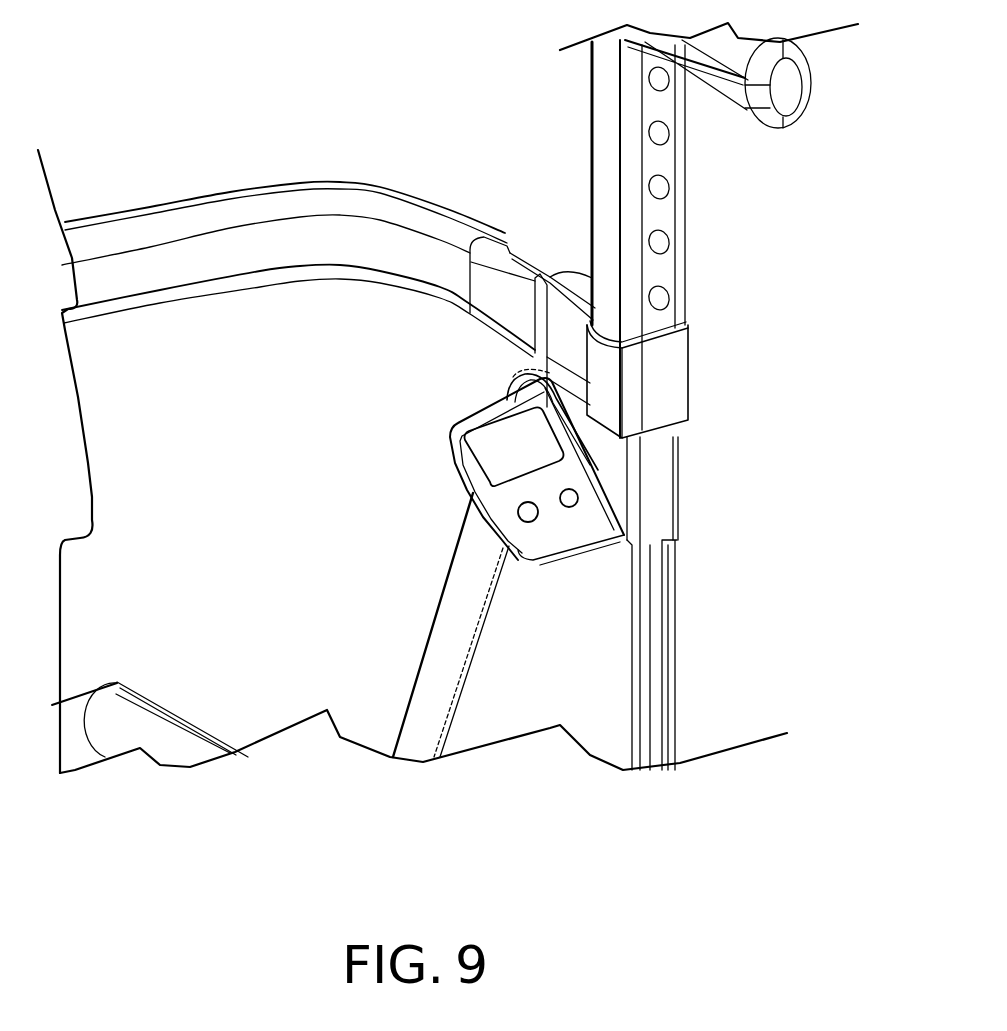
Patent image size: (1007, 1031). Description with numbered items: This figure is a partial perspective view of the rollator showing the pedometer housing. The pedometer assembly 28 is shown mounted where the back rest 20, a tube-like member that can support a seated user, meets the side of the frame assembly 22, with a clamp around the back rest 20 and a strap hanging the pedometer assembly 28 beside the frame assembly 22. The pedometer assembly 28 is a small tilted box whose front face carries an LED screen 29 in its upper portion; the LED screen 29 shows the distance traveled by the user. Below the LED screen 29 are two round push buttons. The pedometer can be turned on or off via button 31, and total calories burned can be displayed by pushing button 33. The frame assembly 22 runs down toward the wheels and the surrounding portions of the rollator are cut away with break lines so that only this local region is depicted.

The back rest 20 is at (253, 207).
The frame assembly 22 is at (450, 633).
The pedometer assembly 28 is at (442, 370).
The LED screen 29 is at (500, 443).
The button 31 is at (535, 522).
The button 33 is at (574, 506).